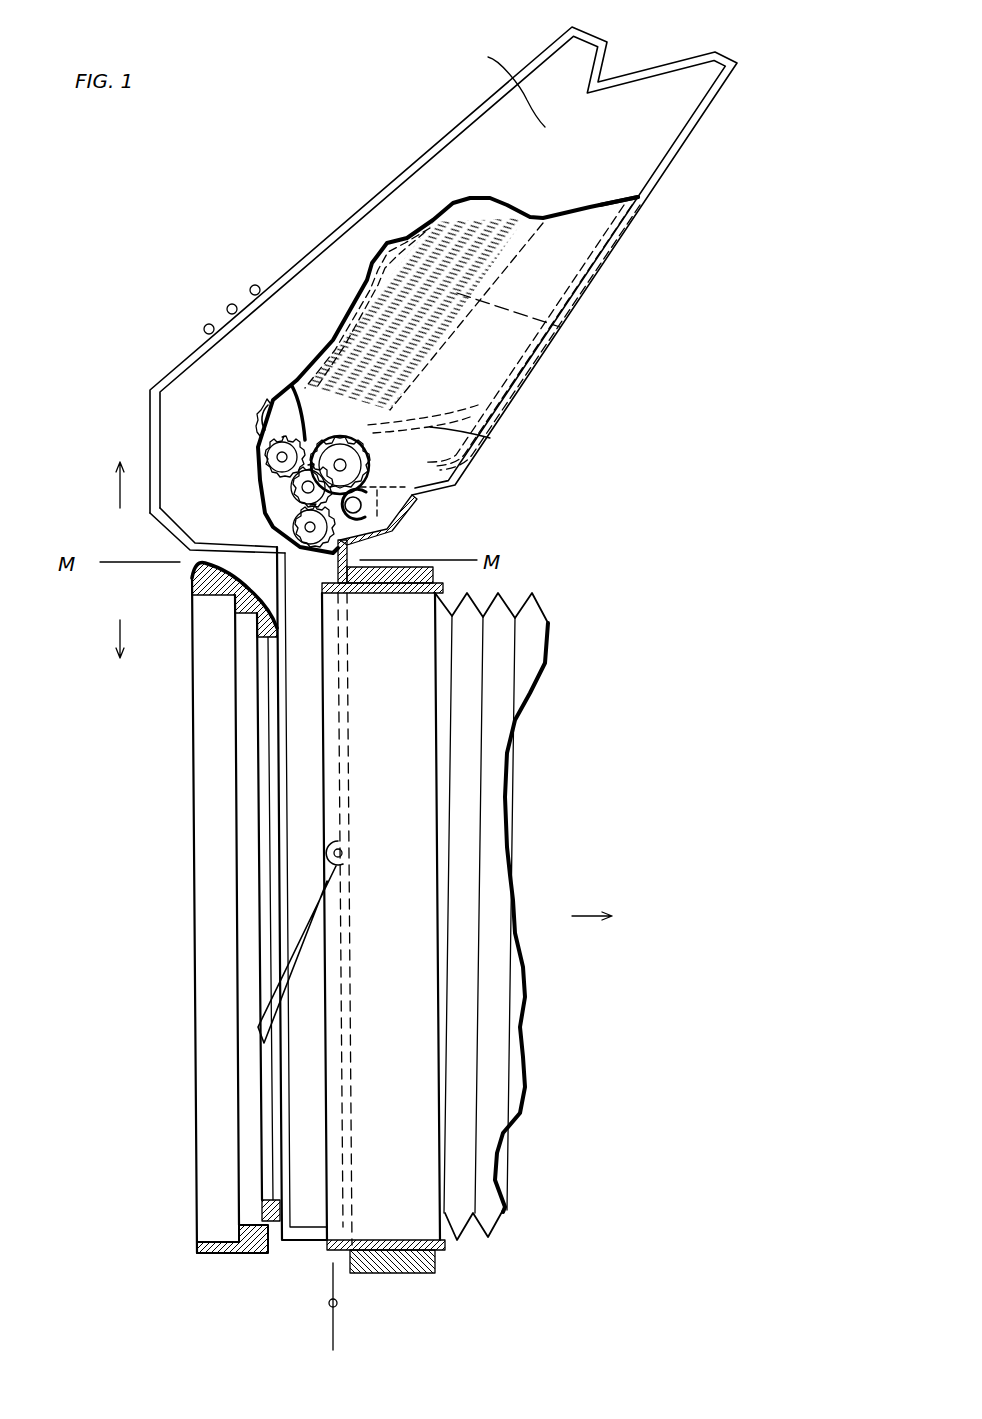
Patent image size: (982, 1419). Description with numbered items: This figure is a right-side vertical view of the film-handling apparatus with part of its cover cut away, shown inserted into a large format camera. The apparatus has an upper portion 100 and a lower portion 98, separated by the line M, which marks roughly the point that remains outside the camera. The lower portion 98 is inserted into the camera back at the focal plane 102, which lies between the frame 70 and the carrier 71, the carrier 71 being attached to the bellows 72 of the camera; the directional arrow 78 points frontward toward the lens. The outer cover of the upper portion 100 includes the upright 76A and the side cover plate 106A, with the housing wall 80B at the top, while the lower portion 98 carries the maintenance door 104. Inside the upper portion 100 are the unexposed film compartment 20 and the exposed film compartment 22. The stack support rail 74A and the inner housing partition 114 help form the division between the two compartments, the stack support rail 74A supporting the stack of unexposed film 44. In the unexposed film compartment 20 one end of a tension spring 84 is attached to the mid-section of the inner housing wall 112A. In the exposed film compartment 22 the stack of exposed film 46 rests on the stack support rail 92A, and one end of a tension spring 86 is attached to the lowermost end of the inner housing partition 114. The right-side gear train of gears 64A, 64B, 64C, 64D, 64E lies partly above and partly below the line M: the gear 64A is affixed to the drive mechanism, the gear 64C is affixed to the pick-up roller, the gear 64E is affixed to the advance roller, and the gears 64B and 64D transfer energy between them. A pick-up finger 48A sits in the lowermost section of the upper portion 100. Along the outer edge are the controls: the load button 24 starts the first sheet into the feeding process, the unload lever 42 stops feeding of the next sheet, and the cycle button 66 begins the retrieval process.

The side cover plate 106A is at (488, 57).
The upright 76A is at (452, 127).
The stack of unexposed film 44 is at (463, 200).
The unexposed film compartment 20 is at (438, 226).
The inner housing wall 112A is at (378, 246).
The exposed film compartment 22 is at (570, 223).
The cycle button 66 is at (250, 287).
The load button 24 is at (228, 306).
The unload lever 42 is at (205, 326).
The tension spring 84 is at (358, 292).
The stack of exposed film 46 is at (587, 250).
The stack support rail 92A is at (575, 278).
The housing wall 80B is at (573, 300).
The stack support rail 74A is at (560, 326).
The inner housing partition 114 is at (440, 333).
The tension spring 86 is at (490, 440).
The gear 64A is at (265, 420).
The gear 64B is at (262, 447).
The gear 64C is at (325, 460).
The gear 64D is at (290, 490).
The gear 64E is at (292, 523).
The pick-up finger 48A is at (363, 503).
The maintenance door 104 is at (392, 541).
The upper portion 100 is at (124, 502).
The lower portion 98 is at (117, 617).
The frame 70 is at (192, 920).
The carrier 71 is at (351, 933).
The bellows 72 is at (497, 712).
The directional arrow 78 is at (573, 918).
The focal plane 102 is at (329, 1303).